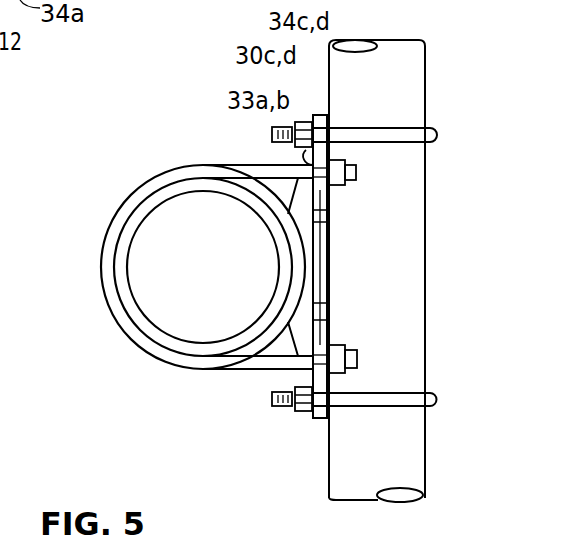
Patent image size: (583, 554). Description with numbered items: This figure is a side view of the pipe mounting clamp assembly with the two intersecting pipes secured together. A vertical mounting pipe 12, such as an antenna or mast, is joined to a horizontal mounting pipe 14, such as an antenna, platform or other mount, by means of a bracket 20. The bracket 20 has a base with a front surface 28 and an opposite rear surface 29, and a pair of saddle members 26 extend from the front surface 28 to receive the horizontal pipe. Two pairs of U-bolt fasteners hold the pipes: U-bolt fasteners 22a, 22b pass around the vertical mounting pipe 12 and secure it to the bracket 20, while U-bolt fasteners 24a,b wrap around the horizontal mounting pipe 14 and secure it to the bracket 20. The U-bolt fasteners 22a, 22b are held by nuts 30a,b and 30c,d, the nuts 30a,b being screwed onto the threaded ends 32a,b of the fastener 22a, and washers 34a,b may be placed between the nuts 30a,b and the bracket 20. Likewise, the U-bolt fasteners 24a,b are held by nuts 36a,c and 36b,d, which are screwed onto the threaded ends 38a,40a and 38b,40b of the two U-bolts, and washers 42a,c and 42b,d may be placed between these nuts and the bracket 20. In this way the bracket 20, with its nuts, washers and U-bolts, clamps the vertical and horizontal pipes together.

The vertical mounting pipe 12 is at (414, 63).
The horizontal mounting pipe 14 is at (137, 316).
The bracket 20 is at (317, 252).
The U-bolt fastener 22a is at (440, 399).
The U-bolt fastener 22b is at (440, 135).
The U-bolt fasteners 24a,b is at (108, 275).
The saddle members 26 is at (299, 207).
The front surface 28 is at (305, 381).
The rear surface 29 is at (320, 289).
The nuts 30a,b is at (304, 412).
The nuts 30c,d is at (303, 134).
The threaded ends 32a,b is at (273, 398).
The washers 34a,b is at (317, 420).
The nuts 36a,c is at (346, 346).
The nuts 36b,d is at (346, 166).
The threaded ends 38a,40a is at (357, 368).
The threaded ends 38b,40b is at (356, 176).
The washers 42a,c is at (340, 386).
The washers 42b,d is at (331, 186).